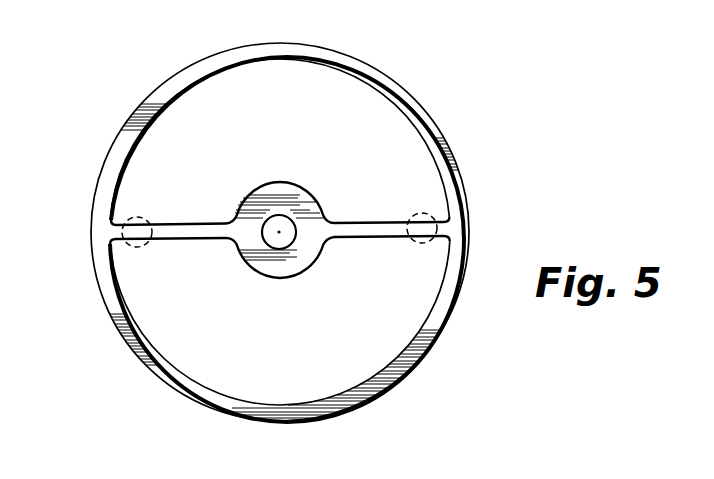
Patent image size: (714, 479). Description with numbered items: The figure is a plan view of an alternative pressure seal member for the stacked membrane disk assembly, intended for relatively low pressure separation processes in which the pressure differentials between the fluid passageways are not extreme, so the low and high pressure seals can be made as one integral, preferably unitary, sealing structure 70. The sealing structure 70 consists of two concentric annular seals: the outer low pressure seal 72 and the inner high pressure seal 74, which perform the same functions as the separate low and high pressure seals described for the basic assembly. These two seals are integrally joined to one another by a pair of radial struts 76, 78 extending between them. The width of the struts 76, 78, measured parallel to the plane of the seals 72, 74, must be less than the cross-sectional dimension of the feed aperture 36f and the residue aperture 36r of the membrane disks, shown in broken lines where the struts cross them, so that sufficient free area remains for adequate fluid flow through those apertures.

The sealing structure 70 is at (123, 362).
The low pressure seal 72 is at (116, 300).
The high pressure seal 74 is at (284, 192).
The radial strut 76 is at (203, 195).
The radial strut 78 is at (351, 238).
The residue aperture 36r is at (128, 218).
The feed aperture 36f is at (432, 210).